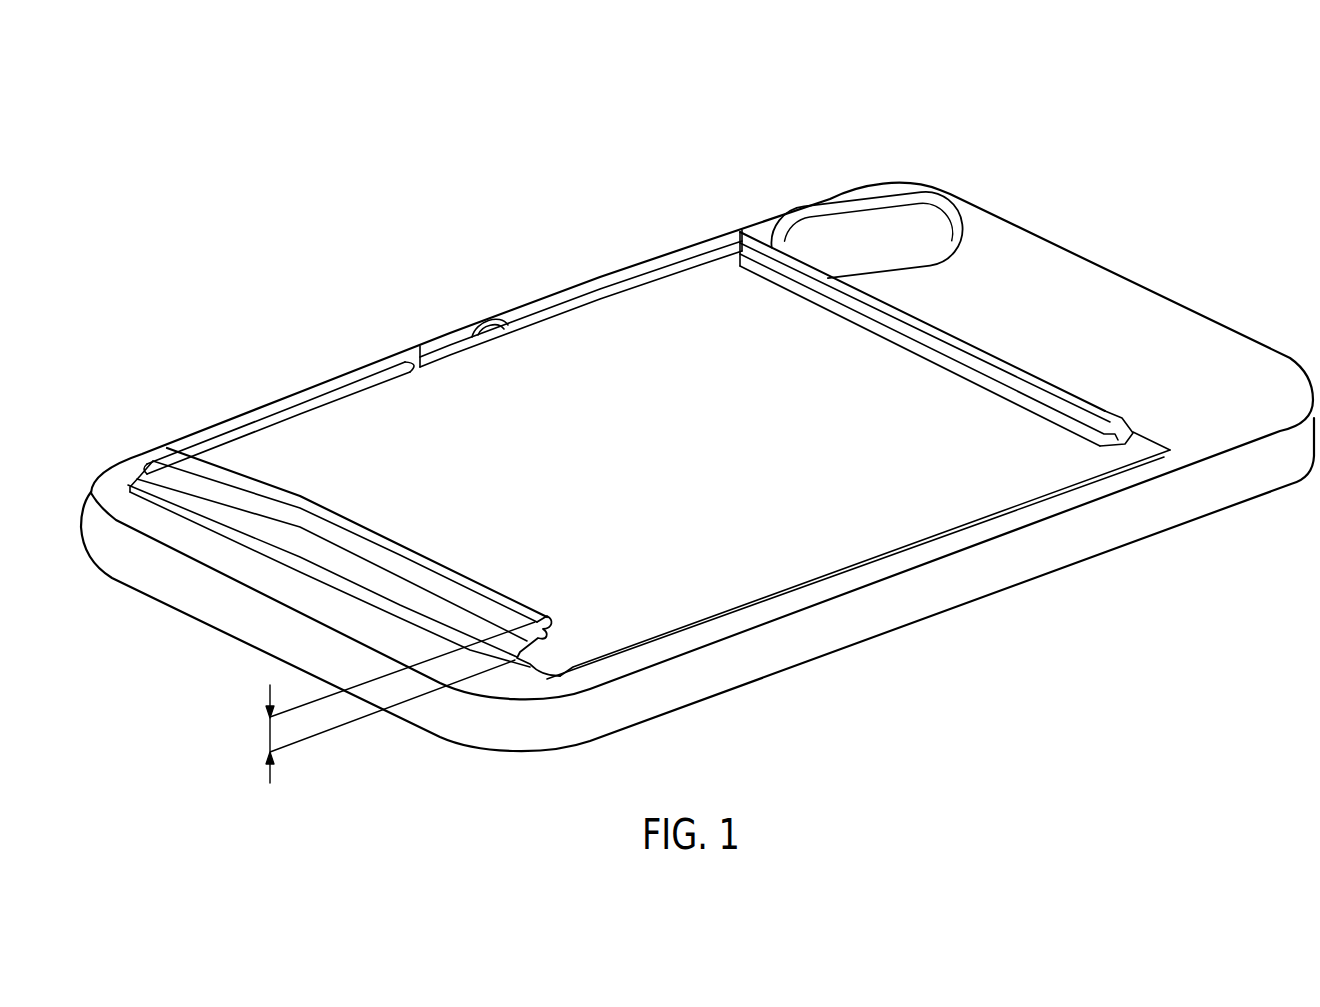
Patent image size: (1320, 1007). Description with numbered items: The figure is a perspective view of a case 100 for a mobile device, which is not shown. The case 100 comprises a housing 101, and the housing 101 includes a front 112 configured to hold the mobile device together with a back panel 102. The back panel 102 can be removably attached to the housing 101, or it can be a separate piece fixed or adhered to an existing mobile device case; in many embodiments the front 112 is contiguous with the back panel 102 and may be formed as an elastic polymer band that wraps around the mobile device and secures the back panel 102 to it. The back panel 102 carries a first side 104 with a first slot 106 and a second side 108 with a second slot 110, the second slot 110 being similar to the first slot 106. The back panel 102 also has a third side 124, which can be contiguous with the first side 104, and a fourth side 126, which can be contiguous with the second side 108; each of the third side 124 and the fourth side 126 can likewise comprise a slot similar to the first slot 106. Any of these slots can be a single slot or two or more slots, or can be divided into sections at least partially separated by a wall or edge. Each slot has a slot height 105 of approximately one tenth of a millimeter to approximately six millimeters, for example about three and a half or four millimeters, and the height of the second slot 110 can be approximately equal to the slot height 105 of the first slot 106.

The case 100 is at (1050, 138).
The housing 101 is at (993, 244).
The back panel 102 is at (1178, 323).
The first side 104 is at (142, 472).
The slot height 105 is at (270, 736).
The first slot 106 is at (548, 635).
The second side 108 is at (1020, 368).
The second slot 110 is at (1043, 407).
The front 112 is at (590, 744).
The third side 124 is at (300, 392).
The fourth side 126 is at (637, 266).